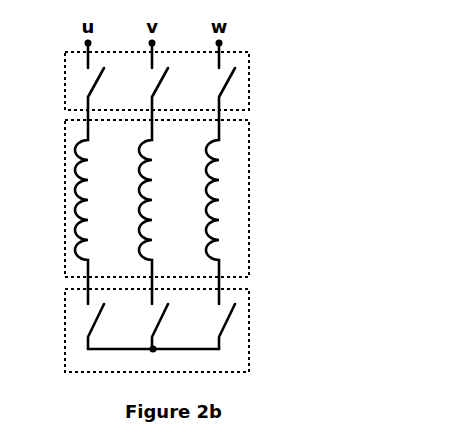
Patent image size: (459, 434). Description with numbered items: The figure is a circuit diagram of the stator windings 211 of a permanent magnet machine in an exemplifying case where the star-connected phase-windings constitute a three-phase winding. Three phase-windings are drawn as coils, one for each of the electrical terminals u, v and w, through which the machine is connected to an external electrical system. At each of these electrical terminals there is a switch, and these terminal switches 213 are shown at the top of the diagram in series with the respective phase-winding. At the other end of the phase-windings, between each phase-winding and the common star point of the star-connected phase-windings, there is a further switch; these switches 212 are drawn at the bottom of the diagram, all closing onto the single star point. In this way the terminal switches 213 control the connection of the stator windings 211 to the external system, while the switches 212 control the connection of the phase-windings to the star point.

The switches at the electrical terminals 213 is at (249, 81).
The stator windings 211 is at (249, 198).
The switches between the phase-windings and the star point 212 is at (249, 317).